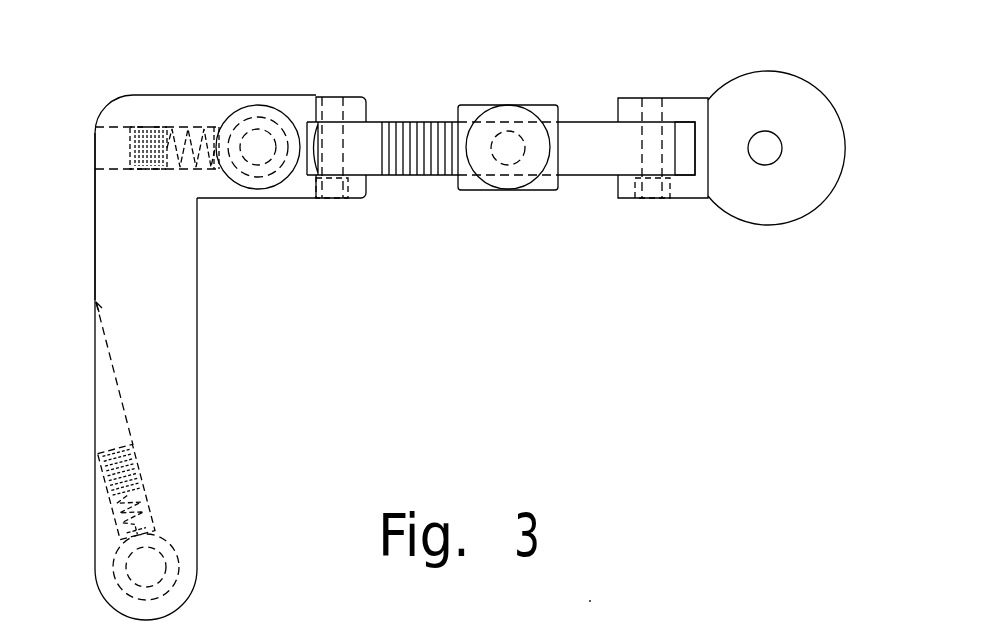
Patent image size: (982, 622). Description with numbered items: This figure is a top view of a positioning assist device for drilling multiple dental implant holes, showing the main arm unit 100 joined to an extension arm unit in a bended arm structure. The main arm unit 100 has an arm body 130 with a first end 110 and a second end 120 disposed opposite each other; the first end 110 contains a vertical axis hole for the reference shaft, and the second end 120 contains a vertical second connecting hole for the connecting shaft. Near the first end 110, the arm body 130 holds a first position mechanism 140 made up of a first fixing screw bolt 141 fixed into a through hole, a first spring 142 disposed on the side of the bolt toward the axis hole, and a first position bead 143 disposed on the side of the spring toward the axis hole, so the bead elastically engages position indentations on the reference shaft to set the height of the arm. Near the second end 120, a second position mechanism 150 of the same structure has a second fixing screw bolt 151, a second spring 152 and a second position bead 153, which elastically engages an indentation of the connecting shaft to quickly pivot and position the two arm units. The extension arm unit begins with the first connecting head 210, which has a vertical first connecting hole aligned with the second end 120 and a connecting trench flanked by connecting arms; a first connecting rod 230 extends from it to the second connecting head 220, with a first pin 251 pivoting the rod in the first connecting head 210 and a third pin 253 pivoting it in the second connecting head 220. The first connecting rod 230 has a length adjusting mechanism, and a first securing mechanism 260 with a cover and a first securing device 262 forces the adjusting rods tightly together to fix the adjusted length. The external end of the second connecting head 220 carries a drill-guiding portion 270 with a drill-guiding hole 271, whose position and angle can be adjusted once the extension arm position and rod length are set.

The main arm unit 100 is at (207, 418).
The first end 110 is at (197, 587).
The second end 120 is at (305, 97).
The arm body 130 is at (195, 375).
The first position mechanism 140 is at (163, 488).
The first fixing screw bolt 141 is at (102, 432).
The first spring 142 is at (97, 492).
The first position bead 143 is at (97, 535).
The second position mechanism 150 is at (197, 176).
The second fixing screw bolt 151 is at (135, 122).
The second spring 152 is at (172, 128).
The second position bead 153 is at (213, 125).
The first connecting head 210 is at (356, 200).
The second connecting head 220 is at (678, 200).
The first connecting rod 230 is at (578, 115).
The first pin 251 is at (325, 200).
The third pin 253 is at (645, 190).
The first securing mechanism 260 is at (527, 97).
The first securing device 262 is at (587, 611).
The drill-guiding portion 270 is at (800, 215).
The drill-guiding hole 271 is at (762, 153).